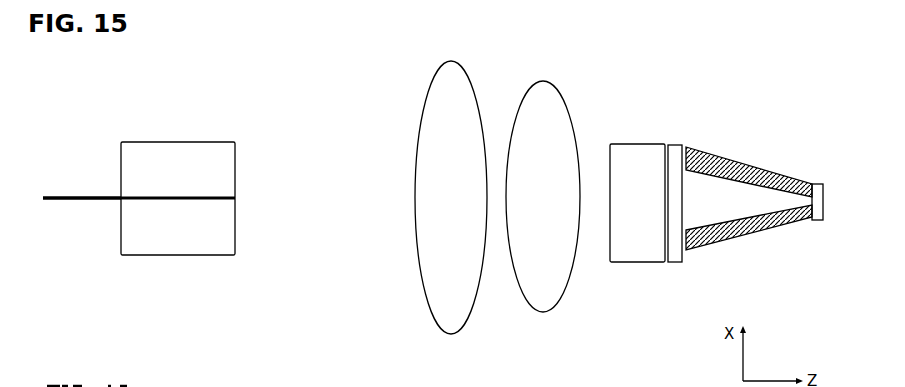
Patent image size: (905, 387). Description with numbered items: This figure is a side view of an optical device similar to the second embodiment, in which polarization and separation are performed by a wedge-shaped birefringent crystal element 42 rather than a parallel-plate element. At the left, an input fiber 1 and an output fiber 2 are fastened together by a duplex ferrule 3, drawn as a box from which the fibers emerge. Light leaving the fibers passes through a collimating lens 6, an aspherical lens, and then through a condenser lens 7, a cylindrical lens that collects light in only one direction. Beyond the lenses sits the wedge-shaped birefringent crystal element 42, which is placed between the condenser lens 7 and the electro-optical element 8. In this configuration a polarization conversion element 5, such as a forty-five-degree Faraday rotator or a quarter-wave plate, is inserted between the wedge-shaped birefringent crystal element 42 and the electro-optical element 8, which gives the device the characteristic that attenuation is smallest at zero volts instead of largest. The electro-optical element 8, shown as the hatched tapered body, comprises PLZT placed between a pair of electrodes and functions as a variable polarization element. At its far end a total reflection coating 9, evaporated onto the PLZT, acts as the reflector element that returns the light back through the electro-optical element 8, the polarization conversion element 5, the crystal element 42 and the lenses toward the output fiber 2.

The input fiber 1 is at (139, 185).
The output fiber 2 is at (82, 216).
The duplex ferrule 3 is at (178, 186).
The polarization conversion element 5 is at (678, 147).
The collimating lens 6 is at (445, 184).
The condenser lens 7 is at (543, 186).
The electro-optical element 8 is at (749, 192).
The total reflection coating 9 is at (820, 219).
The wedge-shaped birefringent crystal element 42 is at (637, 190).